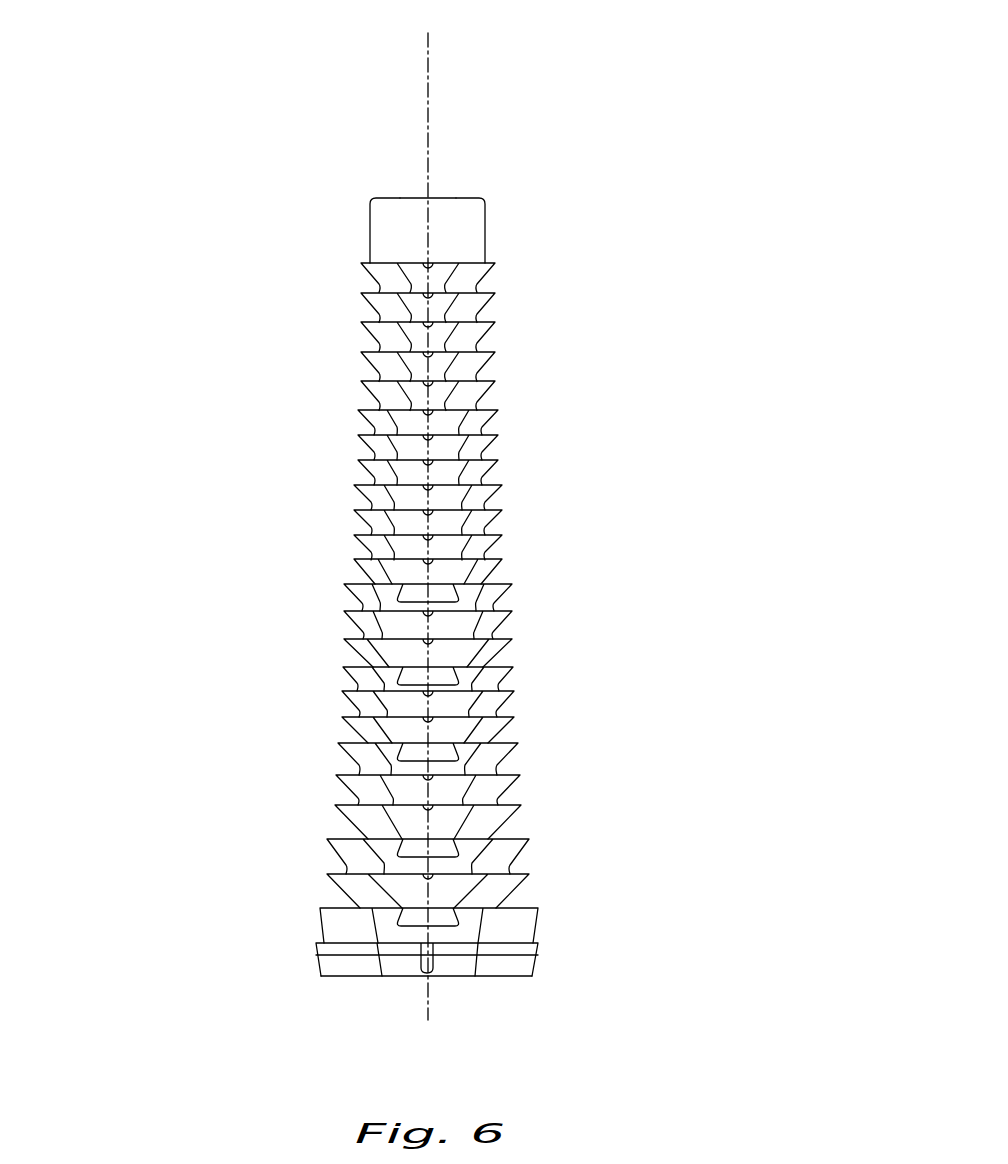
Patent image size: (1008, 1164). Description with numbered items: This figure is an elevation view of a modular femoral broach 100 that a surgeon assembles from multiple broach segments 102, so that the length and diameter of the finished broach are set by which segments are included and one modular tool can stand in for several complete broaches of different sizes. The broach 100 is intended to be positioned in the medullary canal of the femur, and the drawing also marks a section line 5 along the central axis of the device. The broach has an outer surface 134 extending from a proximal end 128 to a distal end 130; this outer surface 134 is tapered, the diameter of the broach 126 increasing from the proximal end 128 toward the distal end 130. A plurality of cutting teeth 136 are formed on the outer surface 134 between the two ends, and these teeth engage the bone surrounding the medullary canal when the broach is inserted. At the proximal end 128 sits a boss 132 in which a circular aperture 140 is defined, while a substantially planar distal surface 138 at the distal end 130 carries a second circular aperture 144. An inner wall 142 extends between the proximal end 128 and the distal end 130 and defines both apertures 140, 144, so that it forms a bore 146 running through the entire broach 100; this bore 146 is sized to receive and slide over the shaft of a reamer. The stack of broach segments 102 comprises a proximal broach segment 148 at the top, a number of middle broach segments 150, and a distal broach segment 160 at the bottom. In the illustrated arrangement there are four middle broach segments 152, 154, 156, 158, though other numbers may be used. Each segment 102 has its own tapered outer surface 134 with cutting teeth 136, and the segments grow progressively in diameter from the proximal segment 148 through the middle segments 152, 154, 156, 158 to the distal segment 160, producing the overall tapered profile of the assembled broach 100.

The section line 5 is at (420, 70).
The modular femoral broach 100 is at (724, 77).
The broach segments 102 is at (255, 886).
The broach 126 is at (730, 590).
The proximal end 128 is at (604, 212).
The distal end 130 is at (668, 982).
The boss 132 is at (446, 212).
The outer surface 134 is at (370, 292).
The cutting teeth 136 is at (320, 520).
The distal surface 138 is at (311, 977).
The circular aperture 140 is at (413, 197).
The inner wall 142 is at (462, 195).
The circular aperture 144 is at (372, 975).
The bore 146 is at (439, 188).
The proximal broach segment 148 is at (480, 368).
The middle broach segments 150 is at (576, 601).
The middle broach segment 152 is at (492, 620).
The middle broach segment 154 is at (488, 702).
The middle broach segment 156 is at (490, 783).
The middle broach segment 158 is at (503, 849).
The distal broach segment 160 is at (518, 920).